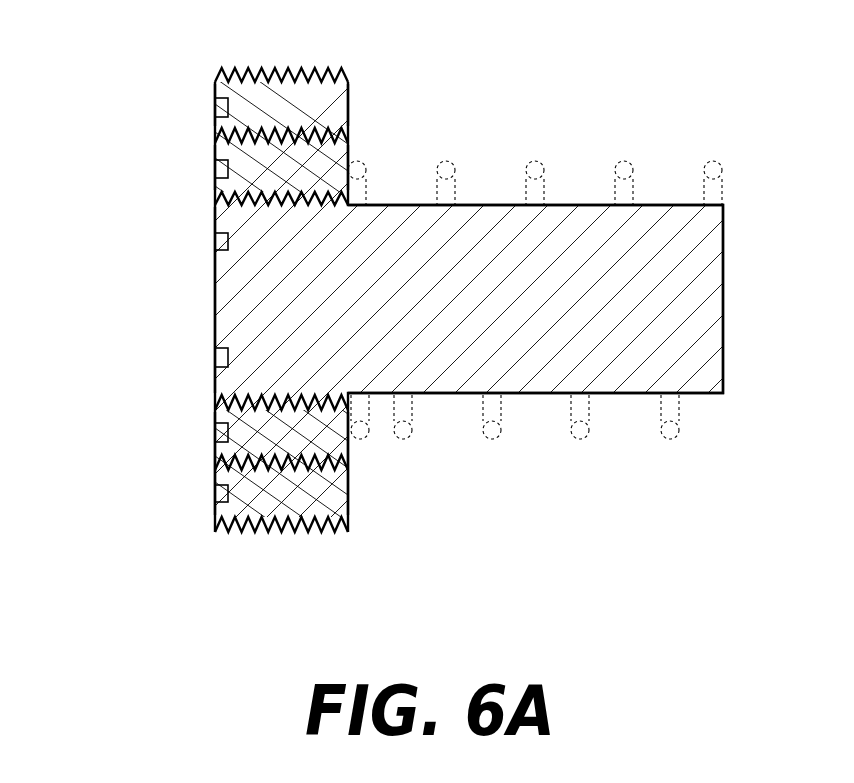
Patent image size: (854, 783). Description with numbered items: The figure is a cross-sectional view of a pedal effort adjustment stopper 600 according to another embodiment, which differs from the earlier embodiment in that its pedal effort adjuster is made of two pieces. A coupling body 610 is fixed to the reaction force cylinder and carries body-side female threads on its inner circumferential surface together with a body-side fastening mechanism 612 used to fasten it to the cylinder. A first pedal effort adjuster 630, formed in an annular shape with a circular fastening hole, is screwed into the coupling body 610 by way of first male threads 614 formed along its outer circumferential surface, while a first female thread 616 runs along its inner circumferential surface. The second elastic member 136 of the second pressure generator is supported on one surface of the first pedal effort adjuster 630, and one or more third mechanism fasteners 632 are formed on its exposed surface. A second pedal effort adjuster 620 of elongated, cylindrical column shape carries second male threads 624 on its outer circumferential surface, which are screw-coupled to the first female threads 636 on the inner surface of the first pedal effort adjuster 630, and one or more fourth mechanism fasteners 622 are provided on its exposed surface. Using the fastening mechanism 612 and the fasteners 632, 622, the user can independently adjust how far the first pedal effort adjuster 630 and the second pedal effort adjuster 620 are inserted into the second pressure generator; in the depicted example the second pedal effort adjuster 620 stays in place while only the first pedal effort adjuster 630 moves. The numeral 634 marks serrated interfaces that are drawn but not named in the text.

The pedal effort adjustment stopper 600 is at (116, 338).
The coupling body 610 is at (347, 97).
The body-side fastening mechanism 612 is at (215, 495).
The first male threads 614 is at (300, 67).
The first female thread 616 is at (215, 137).
The second pedal effort adjuster 620 is at (560, 208).
The fourth mechanism fasteners 622 is at (215, 243).
The second male threads 624 is at (348, 200).
The first pedal effort adjuster 630 is at (347, 157).
The third mechanism fasteners 632 is at (215, 165).
The serrated layer interface 634 is at (348, 137).
The first female threads 636 is at (215, 197).
The second elastic member 136 is at (716, 162).